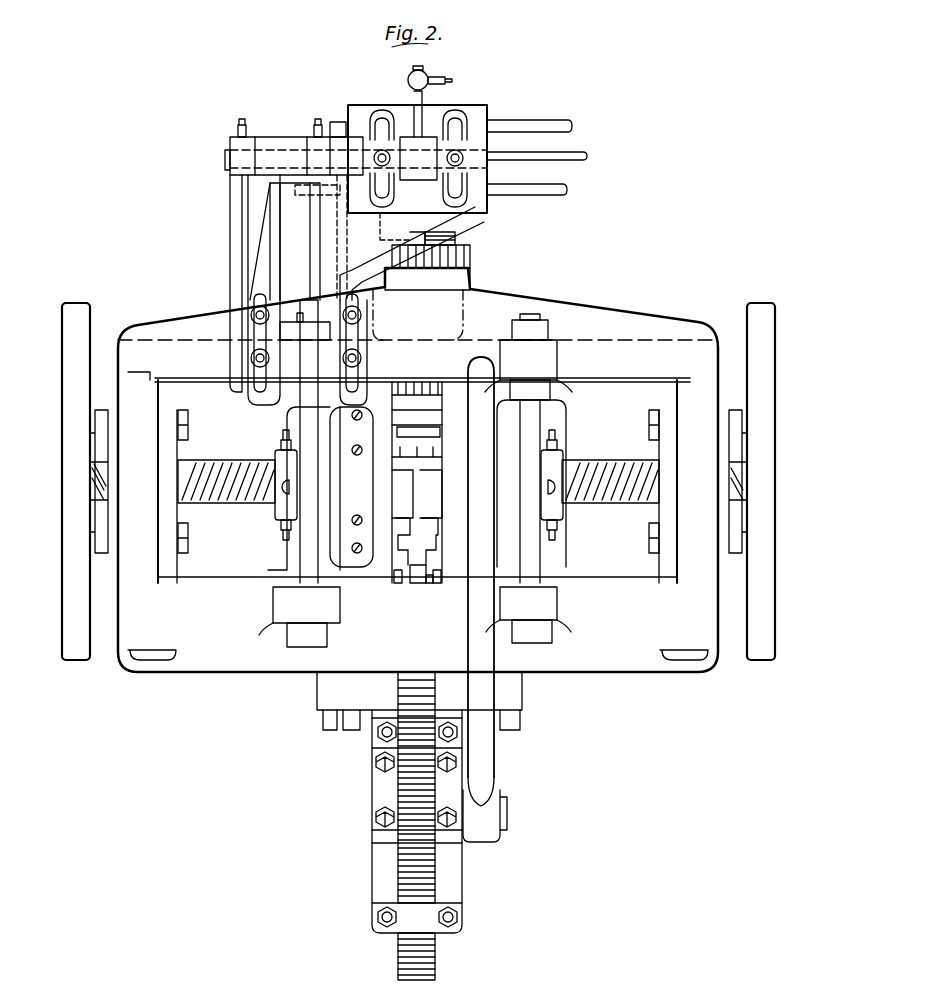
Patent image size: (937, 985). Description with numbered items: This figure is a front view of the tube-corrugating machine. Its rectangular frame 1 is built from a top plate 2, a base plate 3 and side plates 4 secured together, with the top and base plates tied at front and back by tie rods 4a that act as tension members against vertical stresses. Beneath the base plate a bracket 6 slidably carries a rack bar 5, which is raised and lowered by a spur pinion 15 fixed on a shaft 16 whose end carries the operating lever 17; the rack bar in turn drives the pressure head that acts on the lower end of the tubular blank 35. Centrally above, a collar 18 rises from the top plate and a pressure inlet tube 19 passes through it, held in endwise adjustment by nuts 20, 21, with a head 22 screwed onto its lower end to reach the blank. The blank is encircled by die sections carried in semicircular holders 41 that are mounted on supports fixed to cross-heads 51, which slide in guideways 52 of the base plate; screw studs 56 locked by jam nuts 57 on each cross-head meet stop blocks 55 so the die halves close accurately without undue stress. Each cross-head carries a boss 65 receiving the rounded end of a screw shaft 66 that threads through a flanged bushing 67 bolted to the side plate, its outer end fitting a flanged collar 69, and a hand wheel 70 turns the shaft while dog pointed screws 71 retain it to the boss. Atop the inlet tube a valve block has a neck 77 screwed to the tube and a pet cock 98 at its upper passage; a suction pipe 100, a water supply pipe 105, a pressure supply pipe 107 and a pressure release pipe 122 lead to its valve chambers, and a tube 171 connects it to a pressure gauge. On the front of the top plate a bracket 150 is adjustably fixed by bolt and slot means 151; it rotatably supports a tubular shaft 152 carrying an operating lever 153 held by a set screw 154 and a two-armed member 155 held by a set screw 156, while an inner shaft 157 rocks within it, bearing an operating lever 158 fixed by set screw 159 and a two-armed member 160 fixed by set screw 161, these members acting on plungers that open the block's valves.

The rectangular frame 1 is at (676, 313).
The top plate 2 is at (590, 318).
The base plate 3 is at (258, 664).
The side plates 4 is at (152, 402).
The tie rods 4a is at (308, 466).
The rack bar 5 is at (428, 950).
The bracket 6 is at (376, 870).
The spur pinion 15 is at (420, 800).
The shaft 16 is at (470, 815).
The operating lever 17 is at (478, 376).
The central collar 18 is at (425, 272).
The pressure inlet tube 19 is at (456, 250).
The nut 20 is at (420, 390).
The nut 21 is at (450, 262).
The head 22 is at (418, 420).
The tubular blank 35 is at (356, 450).
The semicircular holders 41 is at (396, 490).
The cross-heads 51 is at (352, 500).
The guideways 52 is at (228, 572).
The stop block 55 is at (418, 583).
The screw studs 56 is at (430, 583).
The jam nuts 57 is at (396, 583).
The boss 65 is at (283, 500).
The screw shaft 66 is at (225, 460).
The flanged bushing 67 is at (180, 512).
The flanged collar 69 is at (110, 543).
The hand wheel 70 is at (74, 312).
The dog pointed screws 71 is at (283, 440).
The neck 77 is at (456, 239).
The pet cock 98 is at (424, 78).
The suction pipe 100 is at (300, 182).
The water supply pipe 105 is at (338, 120).
The pressure supply pipe 107 is at (548, 192).
The pressure release pipe 122 is at (540, 124).
The bracket 150 is at (288, 252).
The bolt and slot means 151 is at (355, 330).
The tubular shaft 152 is at (268, 147).
The operating lever 153 is at (310, 233).
The set screw 154 is at (318, 124).
The two-armed member 155 is at (382, 133).
The set screw 156 is at (374, 125).
The shaft 157 is at (225, 158).
The operating lever 158 is at (232, 203).
The set screw 159 is at (236, 129).
The two-armed member 160 is at (464, 208).
The set screw 161 is at (458, 150).
The tube 171 is at (572, 157).